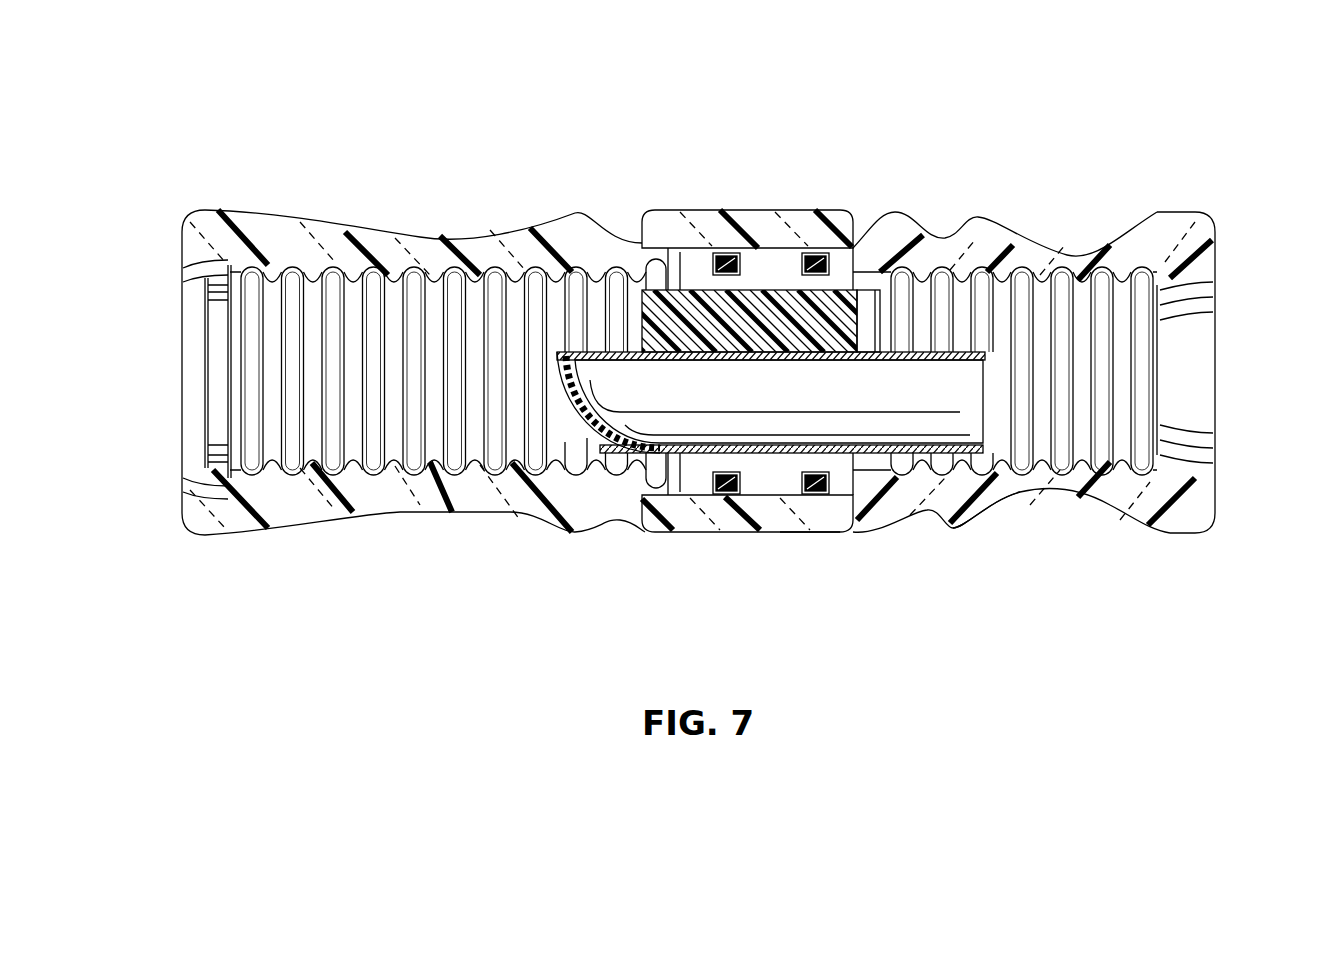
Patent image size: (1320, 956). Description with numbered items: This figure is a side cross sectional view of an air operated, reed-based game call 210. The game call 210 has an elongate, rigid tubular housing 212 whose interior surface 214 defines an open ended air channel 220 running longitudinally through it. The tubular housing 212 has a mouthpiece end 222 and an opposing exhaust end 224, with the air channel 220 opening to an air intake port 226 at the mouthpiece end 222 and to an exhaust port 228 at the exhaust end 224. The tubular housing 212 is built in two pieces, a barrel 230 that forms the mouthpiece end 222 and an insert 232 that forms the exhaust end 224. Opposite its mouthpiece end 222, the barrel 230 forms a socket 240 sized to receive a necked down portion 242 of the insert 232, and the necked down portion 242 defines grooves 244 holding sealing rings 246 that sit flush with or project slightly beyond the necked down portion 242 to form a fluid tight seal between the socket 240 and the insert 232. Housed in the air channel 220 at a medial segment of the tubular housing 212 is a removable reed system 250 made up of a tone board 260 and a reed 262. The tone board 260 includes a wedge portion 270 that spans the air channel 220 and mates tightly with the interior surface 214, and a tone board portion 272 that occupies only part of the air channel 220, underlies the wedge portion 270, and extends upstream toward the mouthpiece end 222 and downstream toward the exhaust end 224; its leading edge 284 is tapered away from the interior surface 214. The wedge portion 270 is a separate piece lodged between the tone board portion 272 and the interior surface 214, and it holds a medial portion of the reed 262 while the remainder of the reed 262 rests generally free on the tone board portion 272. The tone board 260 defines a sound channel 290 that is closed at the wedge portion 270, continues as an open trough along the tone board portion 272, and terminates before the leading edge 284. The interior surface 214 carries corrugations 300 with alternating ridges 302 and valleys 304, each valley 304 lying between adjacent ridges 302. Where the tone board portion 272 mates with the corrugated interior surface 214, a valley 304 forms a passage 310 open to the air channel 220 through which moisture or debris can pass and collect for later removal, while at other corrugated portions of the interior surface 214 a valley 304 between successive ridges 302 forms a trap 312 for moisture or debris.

The game call 210 is at (309, 108).
The tubular housing 212 is at (1003, 650).
The interior surface 214 is at (222, 368).
The air channel 220 is at (685, 427).
The mouthpiece end 222 is at (252, 537).
The exhaust end 224 is at (1192, 535).
The air intake port 226 is at (218, 437).
The exhaust port 228 is at (1146, 353).
The barrel 230 is at (813, 535).
The insert 232 is at (1000, 515).
The socket 240 is at (771, 237).
The necked down portion 242 is at (776, 184).
The grooves 244 is at (850, 206).
The sealing rings 246 is at (813, 255).
The reed system 250 is at (619, 337).
The tone board 260 is at (747, 550).
The reed 262 is at (773, 215).
The wedge portion 270 is at (726, 297).
The tone board portion 272 is at (702, 461).
The leading edge 284 is at (583, 432).
The sound channel 290 is at (803, 396).
The corrugations 300 is at (115, 106).
The ridges 302 is at (310, 270).
The valleys 304 is at (289, 258).
The passages 310 is at (643, 292).
The traps 312 is at (253, 462).